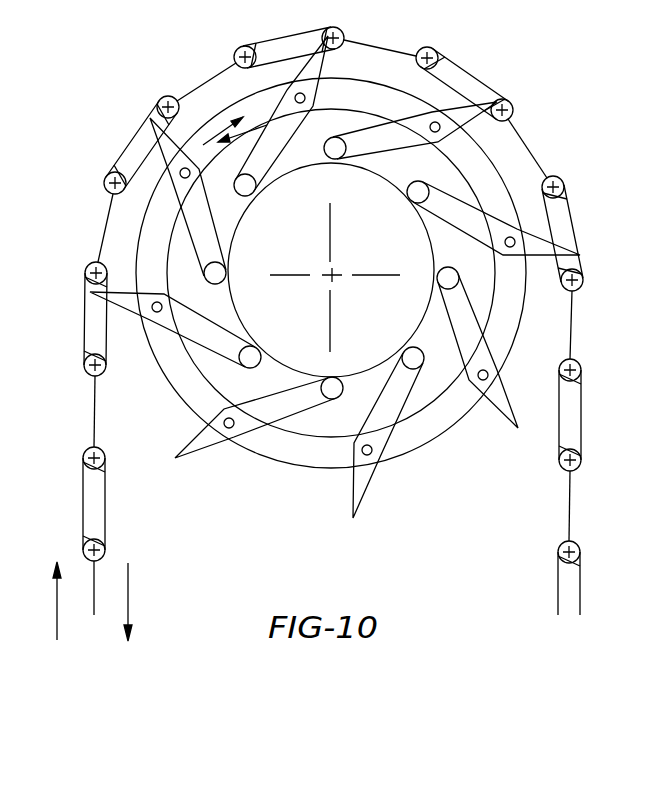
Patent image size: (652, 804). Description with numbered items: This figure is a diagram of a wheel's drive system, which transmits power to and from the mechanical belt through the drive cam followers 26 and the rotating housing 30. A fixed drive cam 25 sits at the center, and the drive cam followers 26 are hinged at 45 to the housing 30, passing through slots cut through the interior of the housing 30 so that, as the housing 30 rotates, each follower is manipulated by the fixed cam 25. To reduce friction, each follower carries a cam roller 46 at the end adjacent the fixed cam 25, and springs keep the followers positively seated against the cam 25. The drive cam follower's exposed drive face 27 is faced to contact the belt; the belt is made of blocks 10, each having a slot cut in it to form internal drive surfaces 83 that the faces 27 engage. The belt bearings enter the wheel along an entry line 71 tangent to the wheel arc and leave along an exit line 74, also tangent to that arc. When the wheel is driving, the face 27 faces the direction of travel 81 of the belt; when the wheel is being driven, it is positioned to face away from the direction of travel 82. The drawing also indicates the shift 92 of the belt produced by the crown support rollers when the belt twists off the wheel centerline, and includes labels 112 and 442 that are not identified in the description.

The block 10 is at (82, 340).
The fixed drive cam 25 is at (387, 350).
The drive cam follower 26 is at (232, 446).
The drive face 27 is at (186, 454).
The rotating housing 30 is at (313, 470).
The hinge 45 is at (368, 460).
The cam roller 46 is at (252, 352).
The entry line 71 is at (97, 585).
The exit line 74 is at (570, 522).
The direction of travel 81 is at (56, 622).
The direction of travel 82 is at (128, 592).
The internal drive surface 83 is at (100, 537).
The shift 92 is at (105, 226).
The roller 112 is at (88, 370).
The axis 442 is at (334, 275).